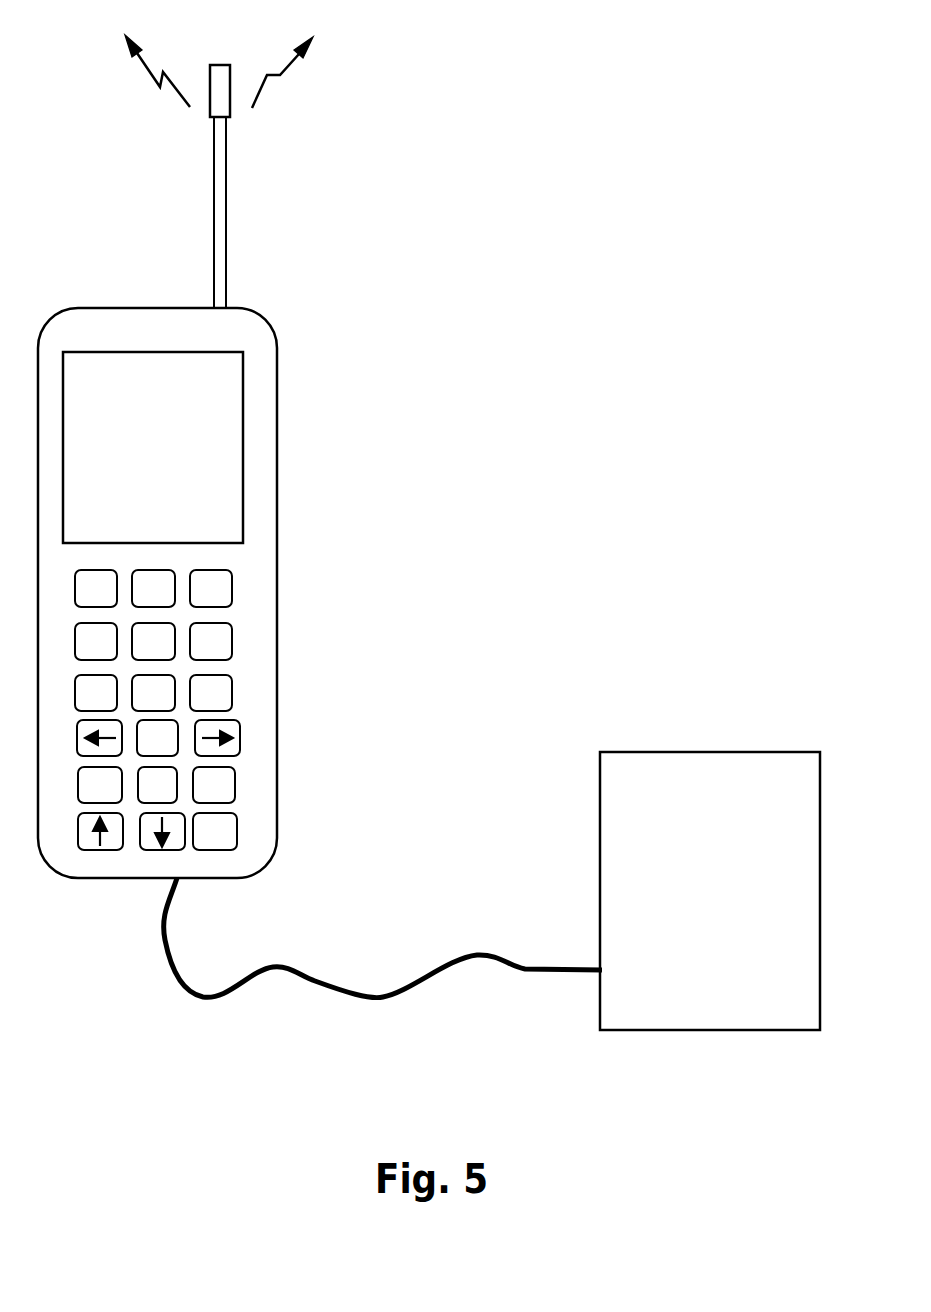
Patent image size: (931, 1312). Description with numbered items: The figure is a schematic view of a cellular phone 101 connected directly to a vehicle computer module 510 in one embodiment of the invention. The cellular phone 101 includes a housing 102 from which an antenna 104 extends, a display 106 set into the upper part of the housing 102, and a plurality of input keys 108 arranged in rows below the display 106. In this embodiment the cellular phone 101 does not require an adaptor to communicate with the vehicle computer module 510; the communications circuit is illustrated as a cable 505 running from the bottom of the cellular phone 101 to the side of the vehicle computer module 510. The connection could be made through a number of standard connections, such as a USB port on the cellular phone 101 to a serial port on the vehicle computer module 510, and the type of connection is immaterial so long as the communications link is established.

The cellular phone 101 is at (222, 456).
The housing 102 is at (277, 555).
The antenna 104 is at (227, 203).
The display 106 is at (243, 485).
The input keys 108 is at (235, 637).
The cable 505 is at (303, 970).
The vehicle computer module 510 is at (693, 752).